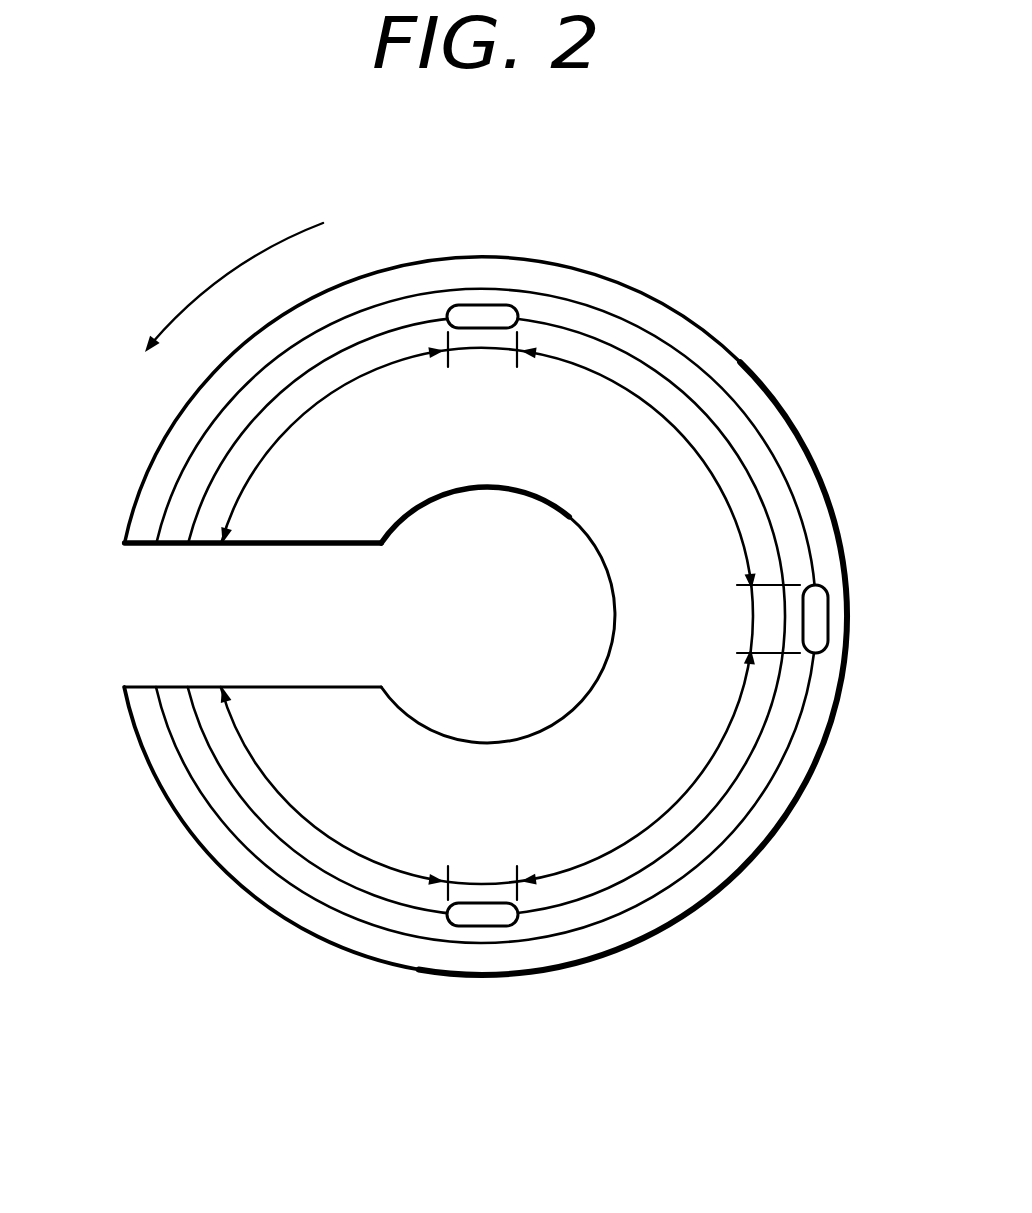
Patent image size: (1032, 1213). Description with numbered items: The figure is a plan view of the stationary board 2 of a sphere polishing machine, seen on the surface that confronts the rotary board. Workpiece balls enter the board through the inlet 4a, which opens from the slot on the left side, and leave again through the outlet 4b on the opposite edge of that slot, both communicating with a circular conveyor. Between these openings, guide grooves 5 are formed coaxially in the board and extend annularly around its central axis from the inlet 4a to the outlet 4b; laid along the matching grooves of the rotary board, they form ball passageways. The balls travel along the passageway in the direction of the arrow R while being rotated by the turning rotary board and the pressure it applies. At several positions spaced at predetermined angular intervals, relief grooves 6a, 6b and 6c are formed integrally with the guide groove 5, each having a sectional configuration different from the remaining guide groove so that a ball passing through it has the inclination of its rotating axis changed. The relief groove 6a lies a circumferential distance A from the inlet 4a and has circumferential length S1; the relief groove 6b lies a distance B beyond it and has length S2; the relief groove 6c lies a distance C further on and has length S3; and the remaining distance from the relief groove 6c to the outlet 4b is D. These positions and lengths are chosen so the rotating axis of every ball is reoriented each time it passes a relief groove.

The stationary board 2 is at (748, 348).
The inlet 4a is at (128, 686).
The outlet 4b is at (128, 546).
The guide groove 5 is at (723, 827).
The relief groove 6a is at (483, 926).
The relief groove 6b is at (828, 618).
The relief groove 6c is at (490, 305).
The direction of movement R is at (242, 266).
The length of relief groove 6a S1 is at (482, 871).
The length of relief groove 6b S2 is at (758, 619).
The length of relief groove 6c S3 is at (482, 365).
The distance from inlet to relief groove 6a A is at (314, 800).
The distance between relief grooves 6a and 6b B is at (647, 800).
The distance between relief grooves 6b and 6c C is at (648, 438).
The distance from relief groove 6c to outlet D is at (316, 438).